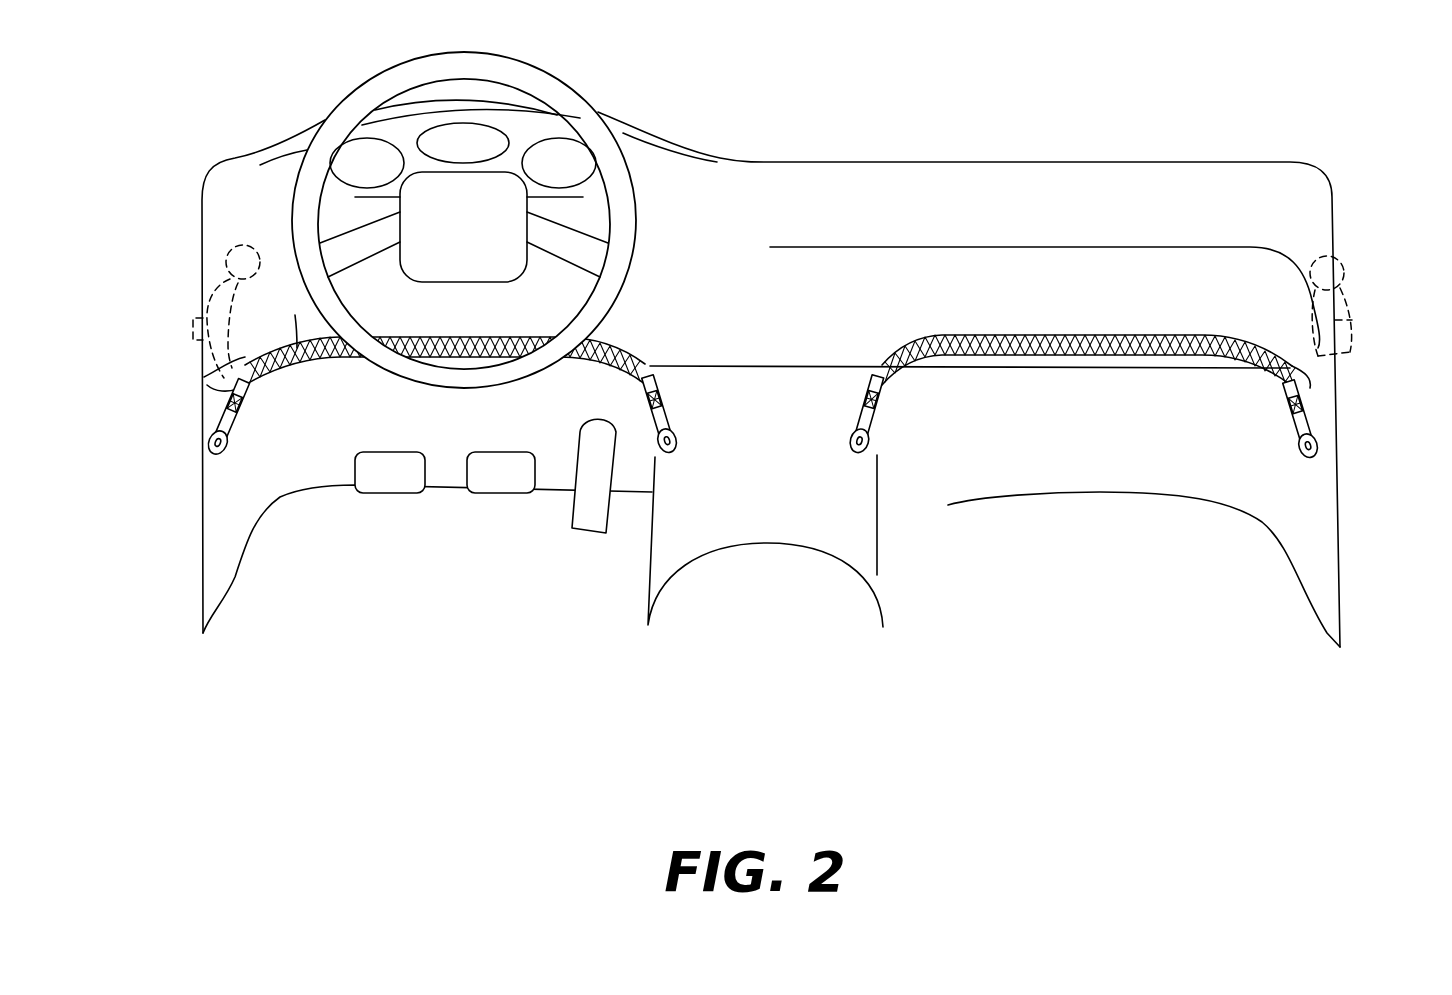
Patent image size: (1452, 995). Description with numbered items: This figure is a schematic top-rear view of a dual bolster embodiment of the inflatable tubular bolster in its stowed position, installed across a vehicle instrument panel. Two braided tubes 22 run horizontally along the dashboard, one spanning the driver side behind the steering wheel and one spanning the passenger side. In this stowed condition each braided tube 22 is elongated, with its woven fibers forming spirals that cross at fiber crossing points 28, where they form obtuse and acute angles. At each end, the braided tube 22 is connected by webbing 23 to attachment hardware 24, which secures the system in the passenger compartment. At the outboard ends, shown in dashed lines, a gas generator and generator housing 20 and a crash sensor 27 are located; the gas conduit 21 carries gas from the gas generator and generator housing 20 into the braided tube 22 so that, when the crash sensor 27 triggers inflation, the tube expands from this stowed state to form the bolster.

The gas generator and generator housing 20 is at (190, 340).
The gas conduit 21 is at (242, 385).
The braided tube 22 is at (295, 315).
The webbing 23 is at (240, 422).
The attachment hardware 24 is at (228, 458).
The crash sensor 27 is at (198, 278).
The fiber crossing points 28 is at (1003, 372).